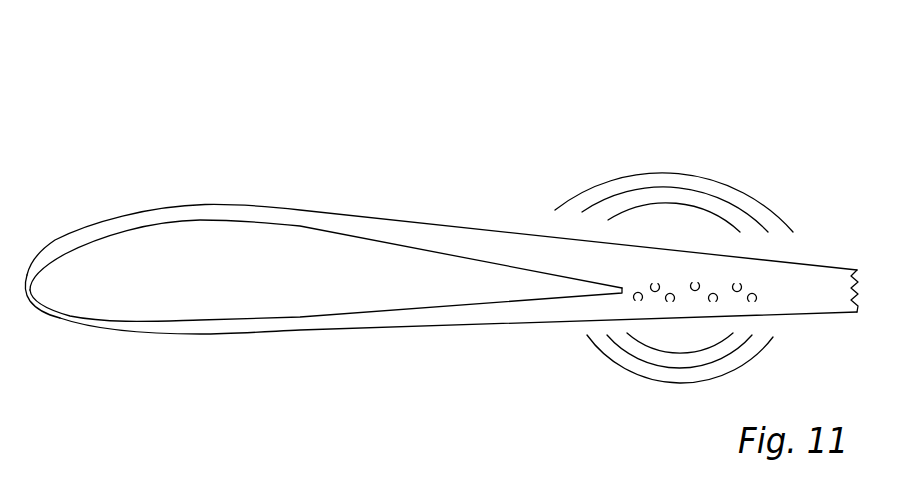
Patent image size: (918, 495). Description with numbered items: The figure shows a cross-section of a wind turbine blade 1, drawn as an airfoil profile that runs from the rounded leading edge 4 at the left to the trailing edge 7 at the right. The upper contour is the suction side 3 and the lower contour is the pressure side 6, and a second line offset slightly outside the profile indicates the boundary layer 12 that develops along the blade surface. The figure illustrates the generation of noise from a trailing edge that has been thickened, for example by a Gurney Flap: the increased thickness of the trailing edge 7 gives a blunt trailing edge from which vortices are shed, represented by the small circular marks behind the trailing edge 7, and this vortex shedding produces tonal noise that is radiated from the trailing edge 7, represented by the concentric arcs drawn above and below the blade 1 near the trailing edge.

The wind turbine blade 1 is at (157, 172).
The suction side 3 is at (298, 227).
The leading edge 4 is at (37, 270).
The pressure side 6 is at (294, 317).
The trailing edge 7 is at (622, 288).
The boundary layer 12 is at (480, 240).